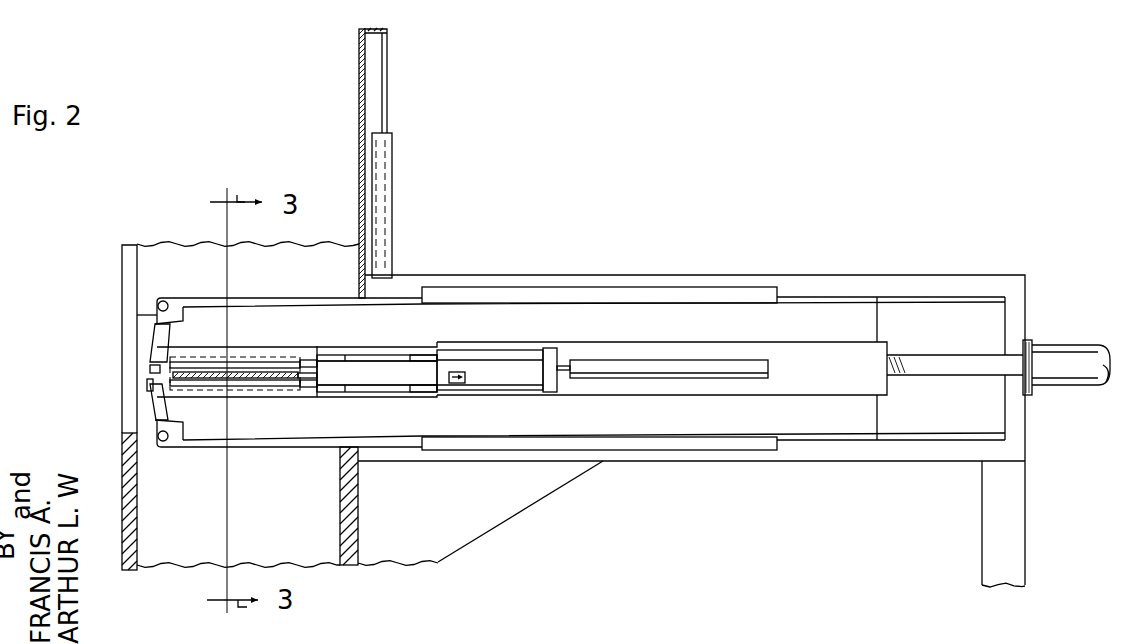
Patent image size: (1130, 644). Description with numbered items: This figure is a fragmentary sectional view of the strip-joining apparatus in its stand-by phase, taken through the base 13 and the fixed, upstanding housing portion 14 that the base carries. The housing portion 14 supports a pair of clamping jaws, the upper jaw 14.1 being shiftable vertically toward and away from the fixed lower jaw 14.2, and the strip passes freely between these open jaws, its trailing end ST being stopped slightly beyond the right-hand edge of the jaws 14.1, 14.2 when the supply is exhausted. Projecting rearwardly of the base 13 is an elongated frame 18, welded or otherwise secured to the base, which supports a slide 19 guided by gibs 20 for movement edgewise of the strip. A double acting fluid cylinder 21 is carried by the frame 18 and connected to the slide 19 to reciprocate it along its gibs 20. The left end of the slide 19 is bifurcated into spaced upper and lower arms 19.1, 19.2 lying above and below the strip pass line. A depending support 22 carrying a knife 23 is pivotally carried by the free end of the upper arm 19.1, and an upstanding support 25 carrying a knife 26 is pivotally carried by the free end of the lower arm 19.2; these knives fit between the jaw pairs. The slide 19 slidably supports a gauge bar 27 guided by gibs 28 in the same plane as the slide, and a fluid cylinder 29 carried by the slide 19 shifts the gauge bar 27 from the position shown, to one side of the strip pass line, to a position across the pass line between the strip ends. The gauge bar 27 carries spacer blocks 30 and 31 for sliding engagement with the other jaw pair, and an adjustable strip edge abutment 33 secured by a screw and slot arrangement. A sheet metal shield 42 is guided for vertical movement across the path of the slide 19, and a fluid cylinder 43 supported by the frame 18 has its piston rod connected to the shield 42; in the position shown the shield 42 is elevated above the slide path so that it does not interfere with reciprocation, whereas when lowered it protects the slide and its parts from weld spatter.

The base 13 is at (122, 503).
The fixed upstanding housing portion 14 is at (122, 315).
The upper jaw 14.1 is at (287, 361).
The lower jaw 14.2 is at (290, 380).
The trailing end of the strip ST is at (262, 378).
The elongated frame 18 is at (851, 278).
The slide 19 is at (812, 440).
The upper arm 19.1 is at (260, 322).
The lower arm 19.2 is at (248, 428).
The gibs 20 is at (678, 295).
The double acting fluid cylinder 21 is at (1060, 340).
The depending support 22 is at (166, 341).
The knife 23 is at (152, 368).
The upstanding support 25 is at (155, 405).
The knife 26 is at (150, 385).
The gauge bar 27 is at (520, 358).
The gibs 28 is at (430, 353).
The fluid cylinder 29 is at (656, 366).
The spacer block 30 is at (337, 358).
The spacer block 31 is at (345, 389).
The strip edge abutment 33 is at (461, 373).
The shield 42 is at (359, 135).
The fluid cylinder 43 is at (388, 178).